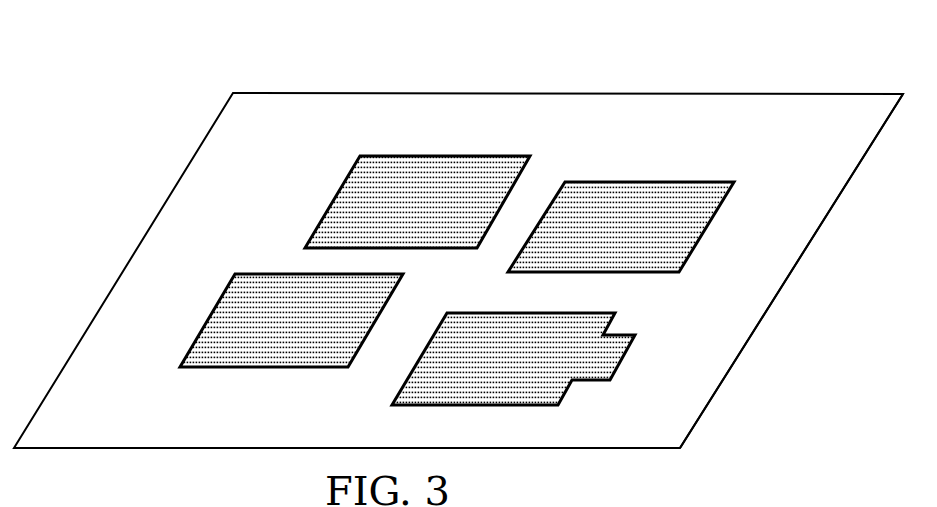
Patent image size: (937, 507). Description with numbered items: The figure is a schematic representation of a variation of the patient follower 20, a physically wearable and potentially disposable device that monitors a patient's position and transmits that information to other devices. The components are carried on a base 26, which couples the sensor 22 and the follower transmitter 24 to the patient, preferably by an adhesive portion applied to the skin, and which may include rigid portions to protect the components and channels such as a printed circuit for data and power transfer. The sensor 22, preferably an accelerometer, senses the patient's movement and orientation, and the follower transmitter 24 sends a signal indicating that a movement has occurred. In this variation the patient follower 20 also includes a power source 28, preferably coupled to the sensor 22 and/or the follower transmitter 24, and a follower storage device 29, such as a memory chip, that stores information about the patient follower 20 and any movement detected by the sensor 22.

The patient follower 20 is at (378, 62).
The sensor 22 is at (682, 162).
The follower transmitter 24 is at (260, 252).
The base 26 is at (706, 375).
The power source 28 is at (312, 174).
The follower storage device 29 is at (630, 318).